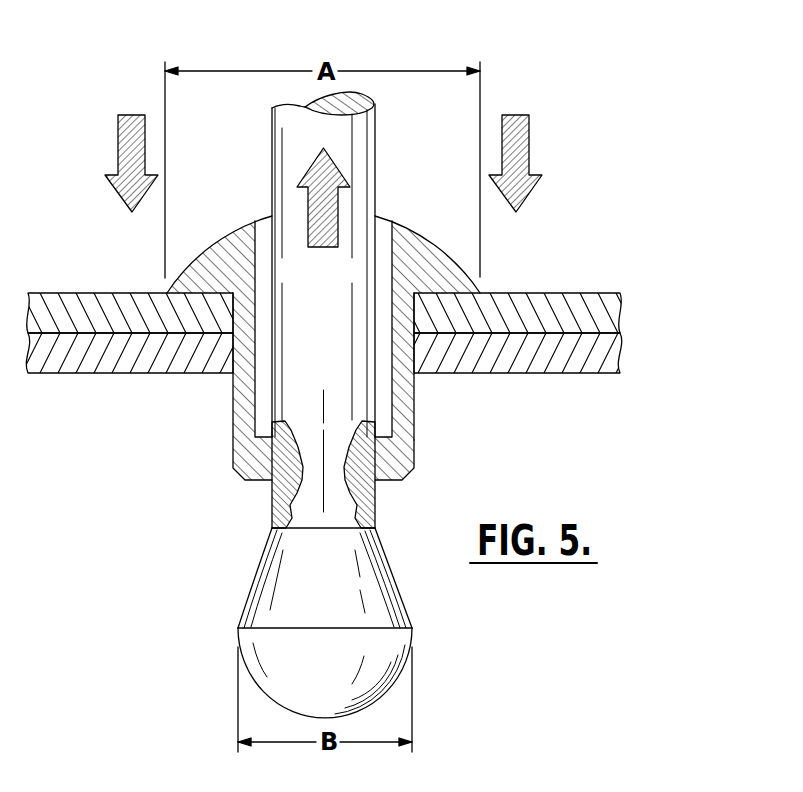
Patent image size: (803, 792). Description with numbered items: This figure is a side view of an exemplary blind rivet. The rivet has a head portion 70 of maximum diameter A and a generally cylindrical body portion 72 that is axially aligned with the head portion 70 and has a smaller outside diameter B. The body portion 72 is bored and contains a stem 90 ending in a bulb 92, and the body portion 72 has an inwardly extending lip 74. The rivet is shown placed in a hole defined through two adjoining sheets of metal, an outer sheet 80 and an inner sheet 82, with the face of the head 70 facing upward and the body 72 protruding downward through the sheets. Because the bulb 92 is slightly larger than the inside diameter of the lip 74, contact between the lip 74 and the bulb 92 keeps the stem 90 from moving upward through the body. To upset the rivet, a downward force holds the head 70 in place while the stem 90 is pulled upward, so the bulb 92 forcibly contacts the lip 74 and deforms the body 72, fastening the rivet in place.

The head portion 70 is at (323, 333).
The body portion 72 is at (412, 410).
The inwardly extending lip 74 is at (411, 465).
The outer sheet 80 is at (580, 300).
The inner sheet 82 is at (597, 357).
The stem 90 is at (318, 492).
The bulb 92 is at (353, 637).